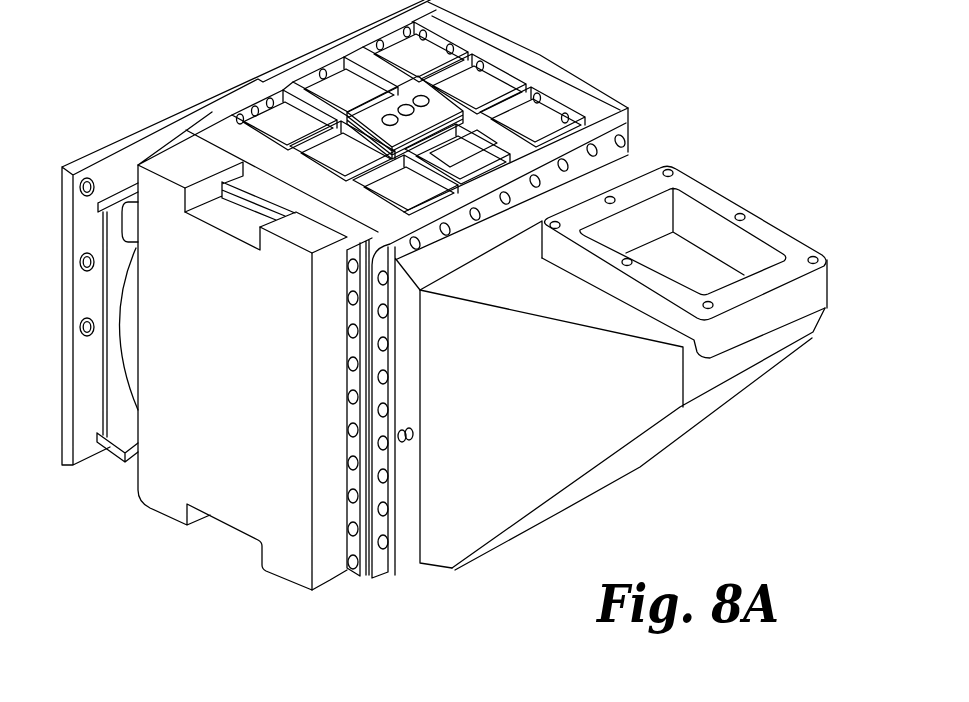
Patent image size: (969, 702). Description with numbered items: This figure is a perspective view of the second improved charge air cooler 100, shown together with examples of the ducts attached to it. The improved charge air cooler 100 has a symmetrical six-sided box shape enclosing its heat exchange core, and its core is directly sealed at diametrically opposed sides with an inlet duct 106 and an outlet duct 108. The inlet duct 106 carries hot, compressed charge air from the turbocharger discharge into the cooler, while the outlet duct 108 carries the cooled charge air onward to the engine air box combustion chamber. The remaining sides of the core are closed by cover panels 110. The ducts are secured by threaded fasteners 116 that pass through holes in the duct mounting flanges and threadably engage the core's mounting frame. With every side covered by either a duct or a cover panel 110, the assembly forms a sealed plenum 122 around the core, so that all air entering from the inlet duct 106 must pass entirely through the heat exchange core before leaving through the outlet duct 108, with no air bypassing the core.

The improved charge air cooler 100 is at (444, 338).
The inlet duct 106 is at (641, 452).
The outlet duct 108 is at (117, 455).
The cover panel 110 is at (480, 88).
The threaded fastener 116 is at (388, 518).
The sealed plenum 122 is at (639, 117).